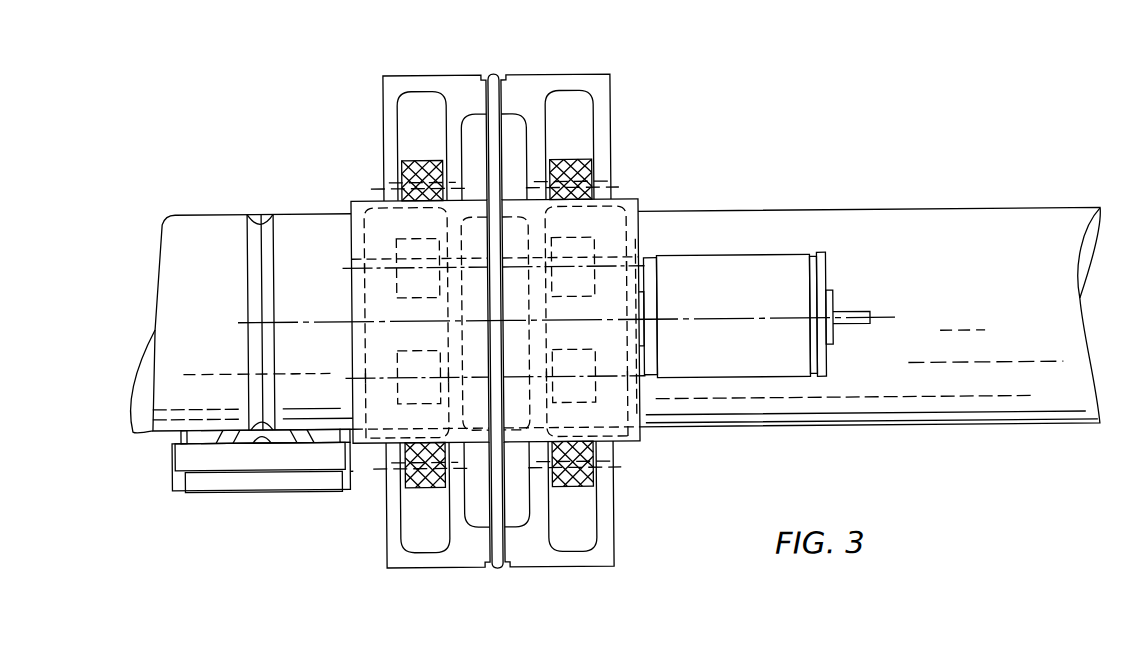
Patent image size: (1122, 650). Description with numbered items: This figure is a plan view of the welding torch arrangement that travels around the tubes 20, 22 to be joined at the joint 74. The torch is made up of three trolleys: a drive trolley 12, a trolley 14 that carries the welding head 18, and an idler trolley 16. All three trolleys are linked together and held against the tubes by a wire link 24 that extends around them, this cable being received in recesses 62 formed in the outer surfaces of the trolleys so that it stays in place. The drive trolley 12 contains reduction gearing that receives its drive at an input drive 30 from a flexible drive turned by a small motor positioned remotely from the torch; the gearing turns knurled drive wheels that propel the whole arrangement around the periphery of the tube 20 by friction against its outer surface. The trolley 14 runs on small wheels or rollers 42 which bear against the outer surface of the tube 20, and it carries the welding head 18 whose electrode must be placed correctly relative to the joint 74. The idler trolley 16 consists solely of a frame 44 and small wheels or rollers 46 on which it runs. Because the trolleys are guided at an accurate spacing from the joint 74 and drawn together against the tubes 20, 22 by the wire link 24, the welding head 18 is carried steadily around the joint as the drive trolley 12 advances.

The drive trolley 12 is at (604, 401).
The trolley 14 is at (528, 540).
The idler trolley 16 is at (395, 100).
The welding head 18 is at (241, 471).
The tube 20 is at (974, 396).
The tube 22 is at (178, 287).
The wire link 24 is at (498, 510).
The input drive 30 is at (850, 326).
The small wheels or rollers 42 is at (554, 478).
The frame 44 is at (464, 93).
The small wheels or rollers 46 is at (416, 171).
The recesses 62 is at (499, 80).
The joint 74 is at (263, 213).